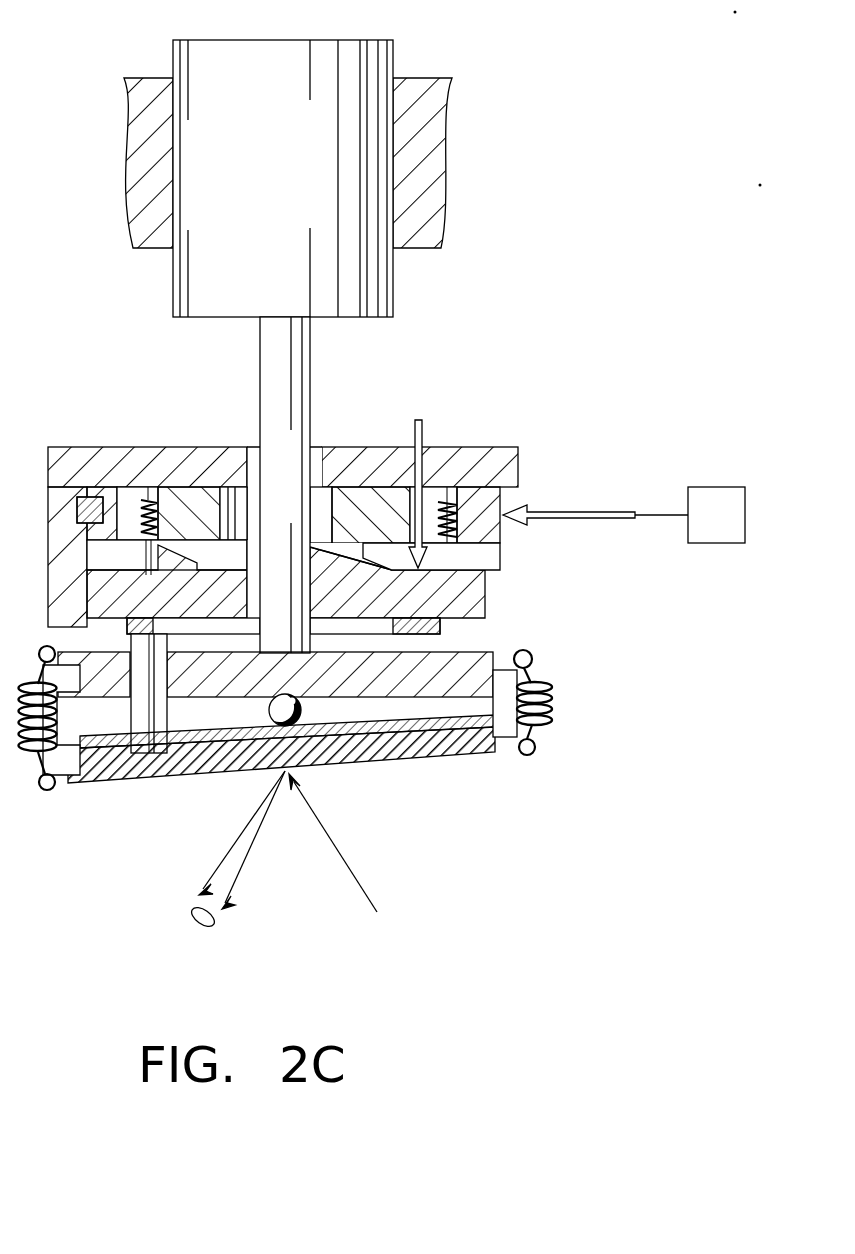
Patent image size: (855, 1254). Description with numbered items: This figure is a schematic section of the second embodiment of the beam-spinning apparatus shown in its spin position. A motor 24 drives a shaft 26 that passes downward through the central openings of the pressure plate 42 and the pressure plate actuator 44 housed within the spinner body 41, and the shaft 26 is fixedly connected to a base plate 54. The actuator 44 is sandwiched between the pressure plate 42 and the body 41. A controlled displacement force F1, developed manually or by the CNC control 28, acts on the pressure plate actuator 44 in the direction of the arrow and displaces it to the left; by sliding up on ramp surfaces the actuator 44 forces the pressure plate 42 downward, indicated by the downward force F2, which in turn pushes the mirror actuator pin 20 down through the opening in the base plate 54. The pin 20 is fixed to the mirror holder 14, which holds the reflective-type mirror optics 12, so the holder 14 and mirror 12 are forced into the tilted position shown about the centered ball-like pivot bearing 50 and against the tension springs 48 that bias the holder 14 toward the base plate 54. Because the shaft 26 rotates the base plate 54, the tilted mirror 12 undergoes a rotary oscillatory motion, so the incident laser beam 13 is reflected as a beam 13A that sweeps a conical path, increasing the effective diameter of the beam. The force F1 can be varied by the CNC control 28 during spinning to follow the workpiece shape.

The reflective-type mirror optics 12 is at (425, 762).
The incident laser beam 13 is at (357, 875).
The reflected beam 13A is at (193, 927).
The mirror holder 14 is at (500, 754).
The mirror actuator pin 20 is at (131, 714).
The motor 24 is at (252, 188).
The shaft 26 is at (260, 427).
The CNC control 28 is at (731, 530).
The spinner body 41 is at (499, 447).
The pressure plate 42 is at (474, 592).
The pressure plate actuator 44 is at (500, 535).
The tension springs 48 is at (553, 700).
The ball-like pivot bearing 50 is at (268, 709).
The base plate 54 is at (502, 652).
The controlled displacement force F1 is at (579, 512).
The vertical force F2 is at (414, 432).